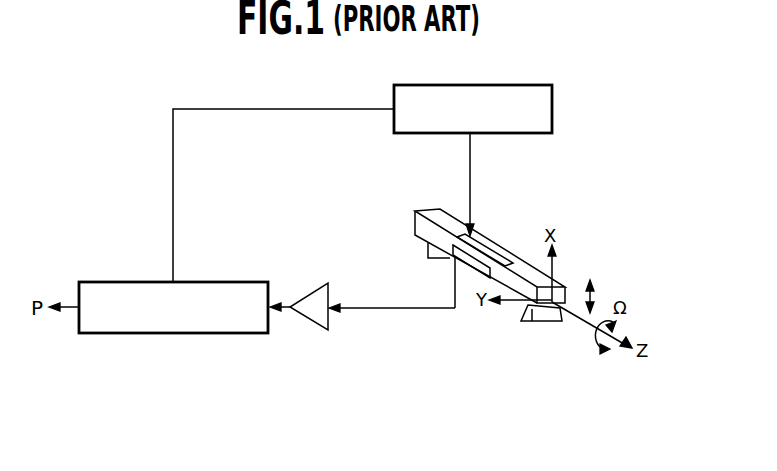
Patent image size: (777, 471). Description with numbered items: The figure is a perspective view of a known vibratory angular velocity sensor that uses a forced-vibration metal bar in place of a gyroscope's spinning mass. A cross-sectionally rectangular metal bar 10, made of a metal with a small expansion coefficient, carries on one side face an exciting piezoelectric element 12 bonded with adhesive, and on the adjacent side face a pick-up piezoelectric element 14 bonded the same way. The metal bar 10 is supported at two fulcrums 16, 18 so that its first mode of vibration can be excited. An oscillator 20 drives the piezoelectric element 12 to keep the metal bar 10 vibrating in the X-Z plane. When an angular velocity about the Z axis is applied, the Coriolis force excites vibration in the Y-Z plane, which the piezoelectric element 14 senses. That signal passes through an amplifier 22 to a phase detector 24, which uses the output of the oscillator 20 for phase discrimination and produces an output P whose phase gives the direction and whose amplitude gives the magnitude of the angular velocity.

The metal bar 10 is at (432, 212).
The piezoelectric element 12 is at (492, 250).
The piezoelectric element 14 is at (458, 264).
The fulcrum 16 is at (420, 245).
The fulcrum 18 is at (527, 313).
The oscillator 20 is at (553, 121).
The amplifier 22 is at (313, 292).
The phase detector 24 is at (247, 282).